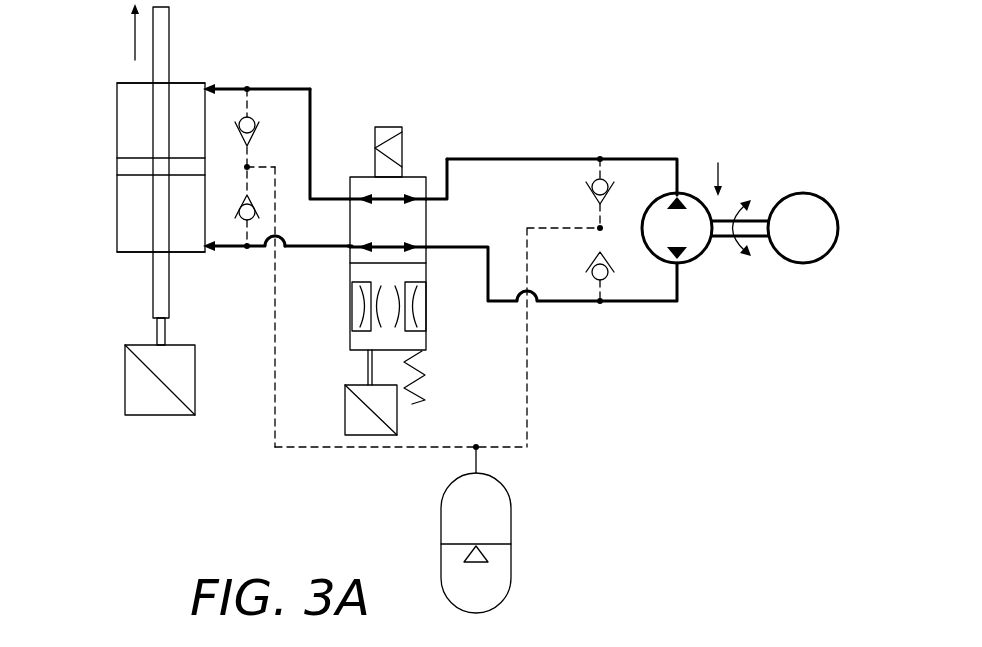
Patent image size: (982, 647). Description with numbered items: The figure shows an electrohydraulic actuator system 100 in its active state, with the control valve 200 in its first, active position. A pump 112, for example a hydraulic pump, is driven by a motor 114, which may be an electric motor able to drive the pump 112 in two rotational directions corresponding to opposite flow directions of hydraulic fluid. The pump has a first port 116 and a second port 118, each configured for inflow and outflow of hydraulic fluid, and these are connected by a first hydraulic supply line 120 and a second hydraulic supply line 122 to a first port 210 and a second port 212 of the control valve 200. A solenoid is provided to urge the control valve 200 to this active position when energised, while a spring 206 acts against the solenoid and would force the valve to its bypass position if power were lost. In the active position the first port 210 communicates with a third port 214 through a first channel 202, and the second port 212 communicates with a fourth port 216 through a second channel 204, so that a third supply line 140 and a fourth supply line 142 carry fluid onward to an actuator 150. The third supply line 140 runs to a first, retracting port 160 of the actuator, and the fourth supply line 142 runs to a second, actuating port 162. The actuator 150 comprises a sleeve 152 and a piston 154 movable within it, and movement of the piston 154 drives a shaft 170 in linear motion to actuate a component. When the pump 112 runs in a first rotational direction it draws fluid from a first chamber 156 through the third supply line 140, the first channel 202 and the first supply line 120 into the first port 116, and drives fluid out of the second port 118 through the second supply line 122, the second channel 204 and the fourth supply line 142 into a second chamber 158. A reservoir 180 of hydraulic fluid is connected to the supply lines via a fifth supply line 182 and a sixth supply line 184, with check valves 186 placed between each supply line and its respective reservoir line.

The electrohydraulic actuator system 100 is at (525, 76).
The pump 112 is at (663, 190).
The motor 114 is at (803, 264).
The first port 116 is at (680, 195).
The second port 118 is at (680, 263).
The first hydraulic supply line 120 is at (566, 157).
The second hydraulic supply line 122 is at (566, 304).
The third supply line 140 is at (315, 95).
The fourth supply line 142 is at (302, 252).
The actuator 150 is at (112, 135).
The sleeve 152 is at (120, 227).
The piston 154 is at (117, 165).
The first chamber 156 is at (117, 97).
The second chamber 158 is at (132, 250).
The retracting port 160 is at (210, 86).
The actuating port 162 is at (212, 252).
The shaft 170 is at (171, 20).
The reservoir 180 is at (514, 514).
The fifth supply line 182 is at (528, 430).
The sixth supply line 184 is at (312, 452).
The check valves 186 is at (588, 188).
The control valve 200 is at (522, 136).
The first channel 202 is at (372, 196).
The second channel 204 is at (388, 245).
The spring 206 is at (422, 398).
The first port 210 is at (428, 197).
The second port 212 is at (428, 250).
The third port 214 is at (310, 182).
The fourth port 216 is at (348, 245).